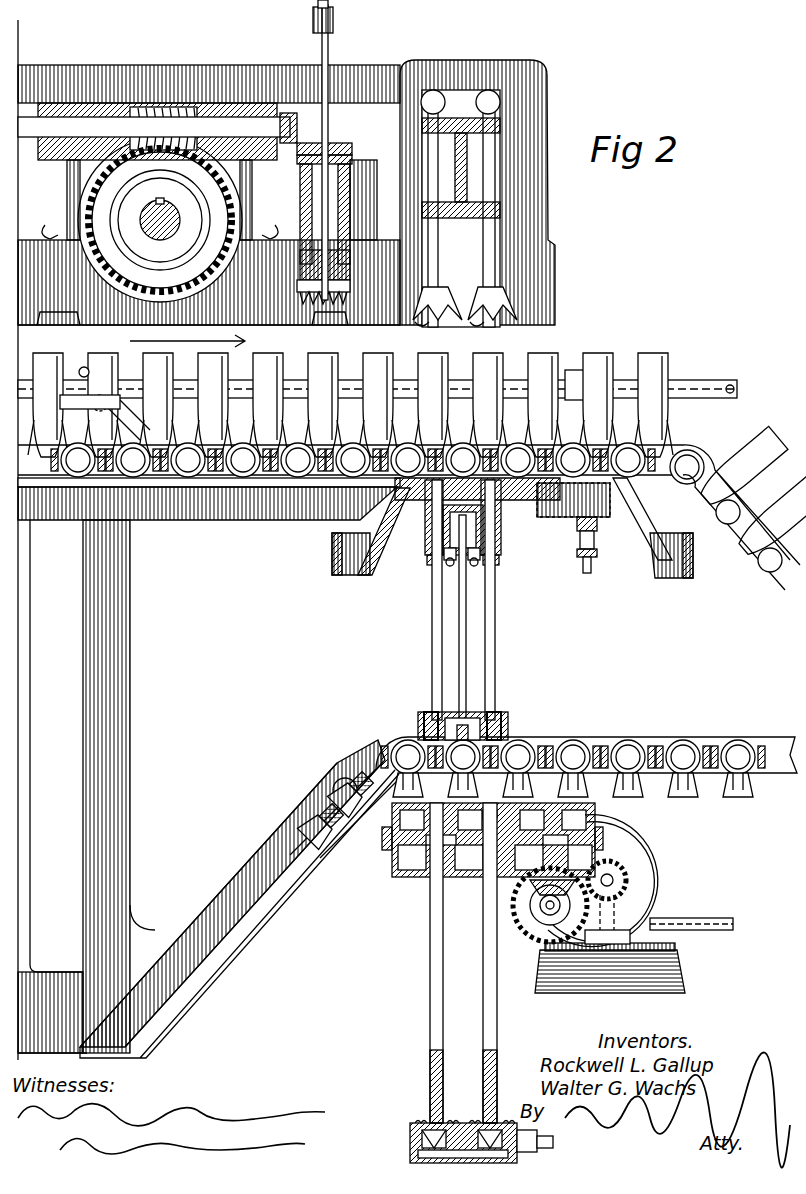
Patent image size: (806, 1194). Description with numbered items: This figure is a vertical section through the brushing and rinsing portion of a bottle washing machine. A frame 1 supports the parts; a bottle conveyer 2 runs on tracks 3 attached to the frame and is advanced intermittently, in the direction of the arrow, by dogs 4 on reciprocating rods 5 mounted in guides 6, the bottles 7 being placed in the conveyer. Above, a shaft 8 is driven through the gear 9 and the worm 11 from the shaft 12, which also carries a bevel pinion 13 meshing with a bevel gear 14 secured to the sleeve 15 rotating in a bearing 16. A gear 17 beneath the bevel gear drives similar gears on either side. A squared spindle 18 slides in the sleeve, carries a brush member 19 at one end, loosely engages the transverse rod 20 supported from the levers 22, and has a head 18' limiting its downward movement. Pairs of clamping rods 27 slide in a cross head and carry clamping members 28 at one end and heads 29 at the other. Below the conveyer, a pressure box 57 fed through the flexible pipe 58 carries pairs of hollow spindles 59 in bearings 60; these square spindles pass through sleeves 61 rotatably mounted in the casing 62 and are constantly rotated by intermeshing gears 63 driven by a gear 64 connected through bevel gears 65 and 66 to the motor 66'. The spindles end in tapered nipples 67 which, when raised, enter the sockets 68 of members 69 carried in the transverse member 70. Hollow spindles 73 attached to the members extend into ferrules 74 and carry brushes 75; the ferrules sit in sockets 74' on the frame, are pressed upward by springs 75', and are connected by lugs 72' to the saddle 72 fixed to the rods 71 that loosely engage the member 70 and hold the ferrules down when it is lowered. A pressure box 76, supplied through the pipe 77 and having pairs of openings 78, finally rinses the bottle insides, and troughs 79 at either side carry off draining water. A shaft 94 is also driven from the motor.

The frame 1 is at (125, 703).
The bottle conveyer 2 is at (700, 462).
The tracks 3 is at (252, 487).
The dogs 4 is at (178, 440).
The reciprocating rods 5 is at (183, 383).
The guides 6 is at (572, 372).
The bottles 7 is at (55, 365).
The shaft 8 is at (175, 217).
The gear 9 is at (225, 230).
The worm 11 is at (150, 108).
The shaft 12 is at (30, 128).
The bevel pinion 13 is at (290, 113).
The bevel gear 14 is at (350, 148).
The sleeve 15 is at (342, 195).
The bearing 16 is at (312, 175).
The gear 17 is at (352, 160).
The squared spindle 18 is at (343, 152).
The head 18' is at (304, 18).
The brush member 19 is at (325, 325).
The rod 20 is at (333, 20).
The levers 22 is at (225, 72).
The clamping rods 27 is at (492, 172).
The clamping members 28 is at (456, 318).
The heads 29 is at (490, 97).
The pressure box 57 is at (540, 1132).
The flexible pipe 58 is at (548, 1149).
The hollow spindles 59 is at (487, 1045).
The bearings 60 is at (466, 1125).
The sleeves 61 is at (392, 868).
The casing 62 is at (382, 835).
The intermeshing gears 63 is at (426, 840).
The gear 64 is at (584, 844).
The bevel gear 65 is at (530, 892).
The bevel gear 66 is at (595, 927).
The motor 66' is at (628, 881).
The tapered nipples 67 is at (500, 812).
The sockets 68 is at (418, 723).
The members 69 is at (425, 712).
The member 70 is at (456, 720).
The rods 71 is at (466, 613).
The saddle 72 is at (463, 530).
The lugs 72' is at (485, 574).
The hollow spindles 73 is at (432, 627).
The ferrules 74 is at (462, 575).
The sockets 74' is at (417, 559).
The brushes 75 is at (507, 517).
The springs 75' is at (418, 517).
The pressure box 76 is at (560, 517).
The pipe 77 is at (592, 572).
The openings 78 is at (628, 528).
The troughs 79 is at (352, 572).
The shaft 94 is at (716, 920).